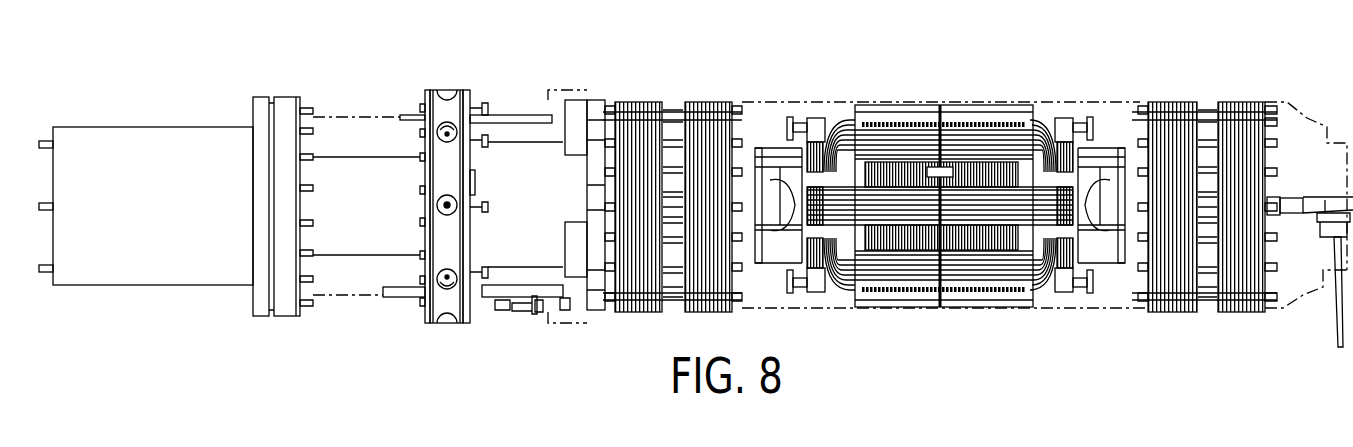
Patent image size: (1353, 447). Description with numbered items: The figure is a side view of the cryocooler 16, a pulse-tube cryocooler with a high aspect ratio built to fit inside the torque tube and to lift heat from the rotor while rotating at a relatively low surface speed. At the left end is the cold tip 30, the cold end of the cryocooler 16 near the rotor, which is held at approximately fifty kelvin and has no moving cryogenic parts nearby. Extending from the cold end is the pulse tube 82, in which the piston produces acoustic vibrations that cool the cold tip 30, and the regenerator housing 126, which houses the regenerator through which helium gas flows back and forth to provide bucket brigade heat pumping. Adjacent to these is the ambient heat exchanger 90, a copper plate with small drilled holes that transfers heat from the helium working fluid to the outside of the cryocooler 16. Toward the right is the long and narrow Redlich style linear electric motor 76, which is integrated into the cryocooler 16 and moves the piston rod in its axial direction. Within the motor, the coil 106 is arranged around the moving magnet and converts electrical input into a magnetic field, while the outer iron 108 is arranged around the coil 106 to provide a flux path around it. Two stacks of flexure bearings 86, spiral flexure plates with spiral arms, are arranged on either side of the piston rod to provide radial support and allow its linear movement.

The cold tip 30 is at (168, 160).
The cryocooler 16 is at (492, 163).
The regenerator housing 126 is at (365, 140).
The ambient heat exchanger 90 is at (448, 105).
The pulse tube 82 is at (363, 230).
The flexure bearings 86 is at (663, 100).
The outer iron 108 is at (855, 163).
The coil 106 is at (977, 237).
The linear electric motor 76 is at (940, 198).